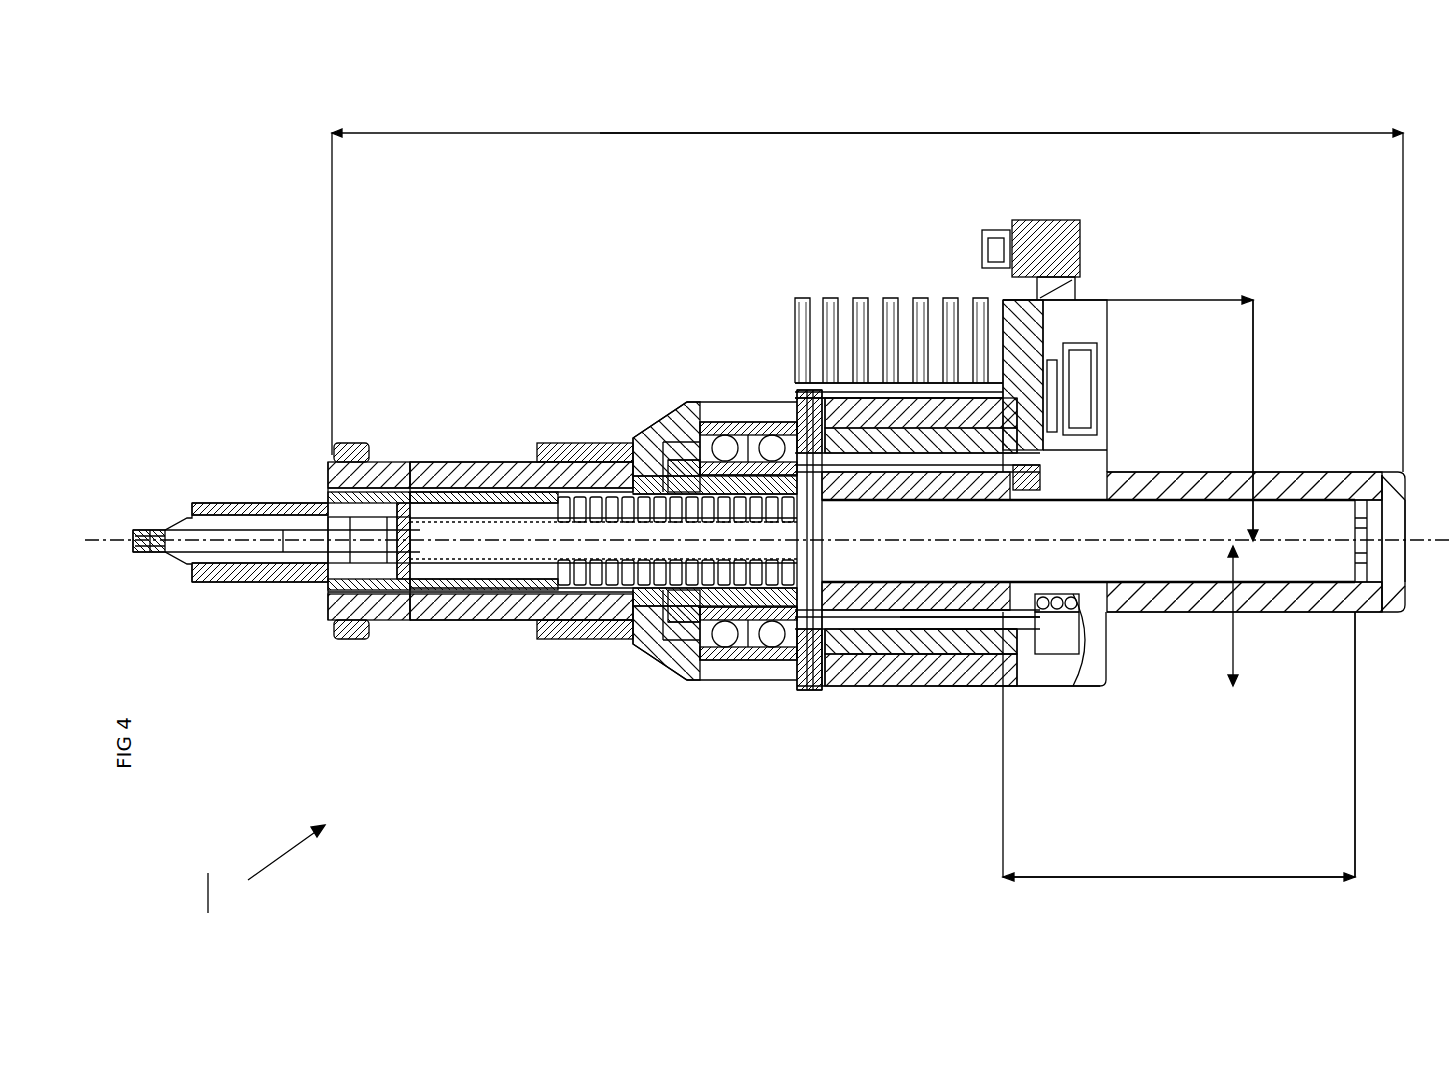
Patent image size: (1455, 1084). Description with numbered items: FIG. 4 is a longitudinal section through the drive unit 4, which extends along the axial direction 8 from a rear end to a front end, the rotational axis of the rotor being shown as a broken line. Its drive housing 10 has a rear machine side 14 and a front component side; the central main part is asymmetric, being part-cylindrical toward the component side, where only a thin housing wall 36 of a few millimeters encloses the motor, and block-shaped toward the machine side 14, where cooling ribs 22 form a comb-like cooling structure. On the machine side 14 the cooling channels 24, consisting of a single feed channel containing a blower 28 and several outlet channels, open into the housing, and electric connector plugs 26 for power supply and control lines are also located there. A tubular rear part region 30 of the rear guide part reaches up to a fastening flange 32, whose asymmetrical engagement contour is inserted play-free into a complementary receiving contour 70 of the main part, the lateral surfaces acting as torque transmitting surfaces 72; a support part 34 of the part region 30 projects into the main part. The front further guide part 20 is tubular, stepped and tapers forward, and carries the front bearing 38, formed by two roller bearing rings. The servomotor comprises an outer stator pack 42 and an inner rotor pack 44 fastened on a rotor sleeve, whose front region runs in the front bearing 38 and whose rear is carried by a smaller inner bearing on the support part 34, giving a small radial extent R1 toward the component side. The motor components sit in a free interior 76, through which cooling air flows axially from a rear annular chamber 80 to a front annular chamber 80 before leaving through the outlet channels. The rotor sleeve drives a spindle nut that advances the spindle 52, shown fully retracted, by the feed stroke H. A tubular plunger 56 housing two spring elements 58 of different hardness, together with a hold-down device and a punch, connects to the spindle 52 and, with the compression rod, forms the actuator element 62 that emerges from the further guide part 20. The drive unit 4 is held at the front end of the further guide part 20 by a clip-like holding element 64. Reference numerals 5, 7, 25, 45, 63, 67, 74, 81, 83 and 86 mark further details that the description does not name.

The drive unit 4 is at (266, 869).
The dimension line 5 is at (885, 133).
The drive unit overall 7 is at (885, 98).
The axial direction 8 is at (918, 522).
The drive housing 10 is at (663, 682).
The machine side 14 is at (1298, 472).
The front further guide part 20 is at (760, 400).
The cooling ribs 22 is at (800, 440).
The cooling channels 24 is at (1058, 228).
The inner sleeve 25 is at (530, 462).
The electric connector plugs 26 is at (1135, 470).
The blower 28 is at (1258, 232).
The tubular rear part region 30 is at (1055, 688).
The fastening flange 32 is at (1045, 660).
The support part 34 is at (1072, 660).
The thin housing wall 36 is at (936, 690).
The front bearing 38 is at (1304, 605).
The stator pack 42 is at (886, 690).
The rotor pack 44 is at (976, 690).
The end cap 45 is at (1372, 472).
The spindle 52 is at (1408, 572).
The plunger 56 is at (476, 620).
The spring elements 58 is at (708, 682).
The actuator element 62 is at (1253, 405).
The tube 63 is at (318, 584).
The holding element 64 is at (1100, 470).
The nozzle tip 67 is at (180, 565).
The receiving contour 70 is at (398, 600).
The torque transmitting surfaces 72 is at (908, 912).
The end plate 74 is at (829, 688).
The free interior 76 is at (778, 682).
The annular chamber 80 is at (860, 688).
The cooling fins 81 is at (898, 296).
The base plate 83 is at (870, 396).
The fin base 86 is at (790, 393).
The feed stroke H is at (1193, 880).
The radial extent R1 is at (1240, 692).